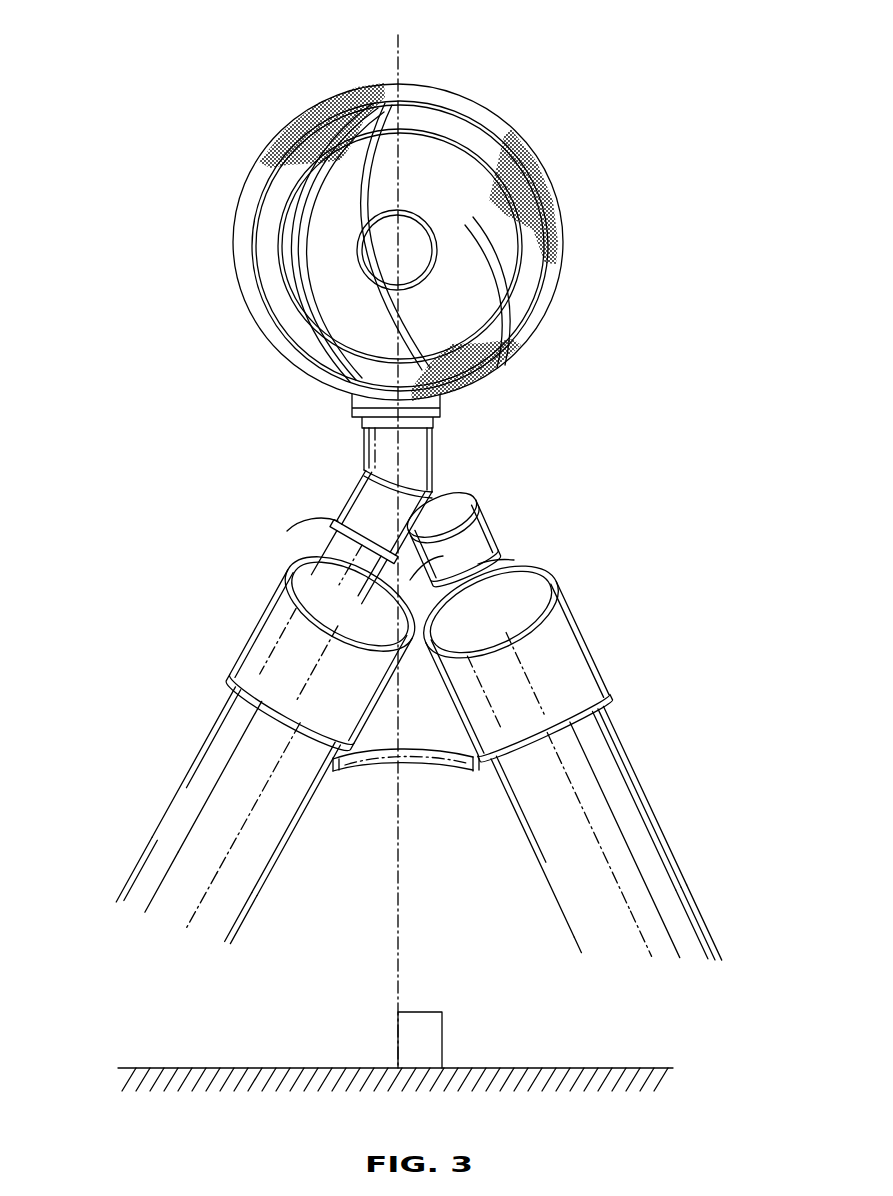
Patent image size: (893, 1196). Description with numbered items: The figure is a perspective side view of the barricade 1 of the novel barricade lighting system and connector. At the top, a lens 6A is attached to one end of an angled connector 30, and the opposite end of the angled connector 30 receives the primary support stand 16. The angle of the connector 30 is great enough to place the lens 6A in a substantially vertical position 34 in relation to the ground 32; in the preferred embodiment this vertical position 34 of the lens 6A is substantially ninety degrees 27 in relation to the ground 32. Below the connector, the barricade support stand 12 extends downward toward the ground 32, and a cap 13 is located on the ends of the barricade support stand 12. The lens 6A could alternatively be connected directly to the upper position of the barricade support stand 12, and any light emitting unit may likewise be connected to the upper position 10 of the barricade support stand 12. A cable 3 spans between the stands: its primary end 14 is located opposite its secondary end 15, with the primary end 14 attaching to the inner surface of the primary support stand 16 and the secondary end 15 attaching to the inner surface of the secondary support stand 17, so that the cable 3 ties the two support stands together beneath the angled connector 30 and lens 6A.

The barricade 1 is at (100, 228).
The lens 6A is at (486, 150).
The angled connector 30 is at (415, 457).
The primary support stand 16 is at (336, 540).
The cap 13 is at (482, 522).
The cable 3 is at (493, 568).
The upper position 10 is at (184, 808).
The barricade support stand 12 is at (160, 858).
The primary end 14 is at (340, 765).
The secondary end 15 is at (497, 772).
The secondary support stand 17 is at (652, 895).
The ninety degrees 27 is at (443, 1033).
The ground 32 is at (596, 1067).
The vertical position 34 is at (398, 983).